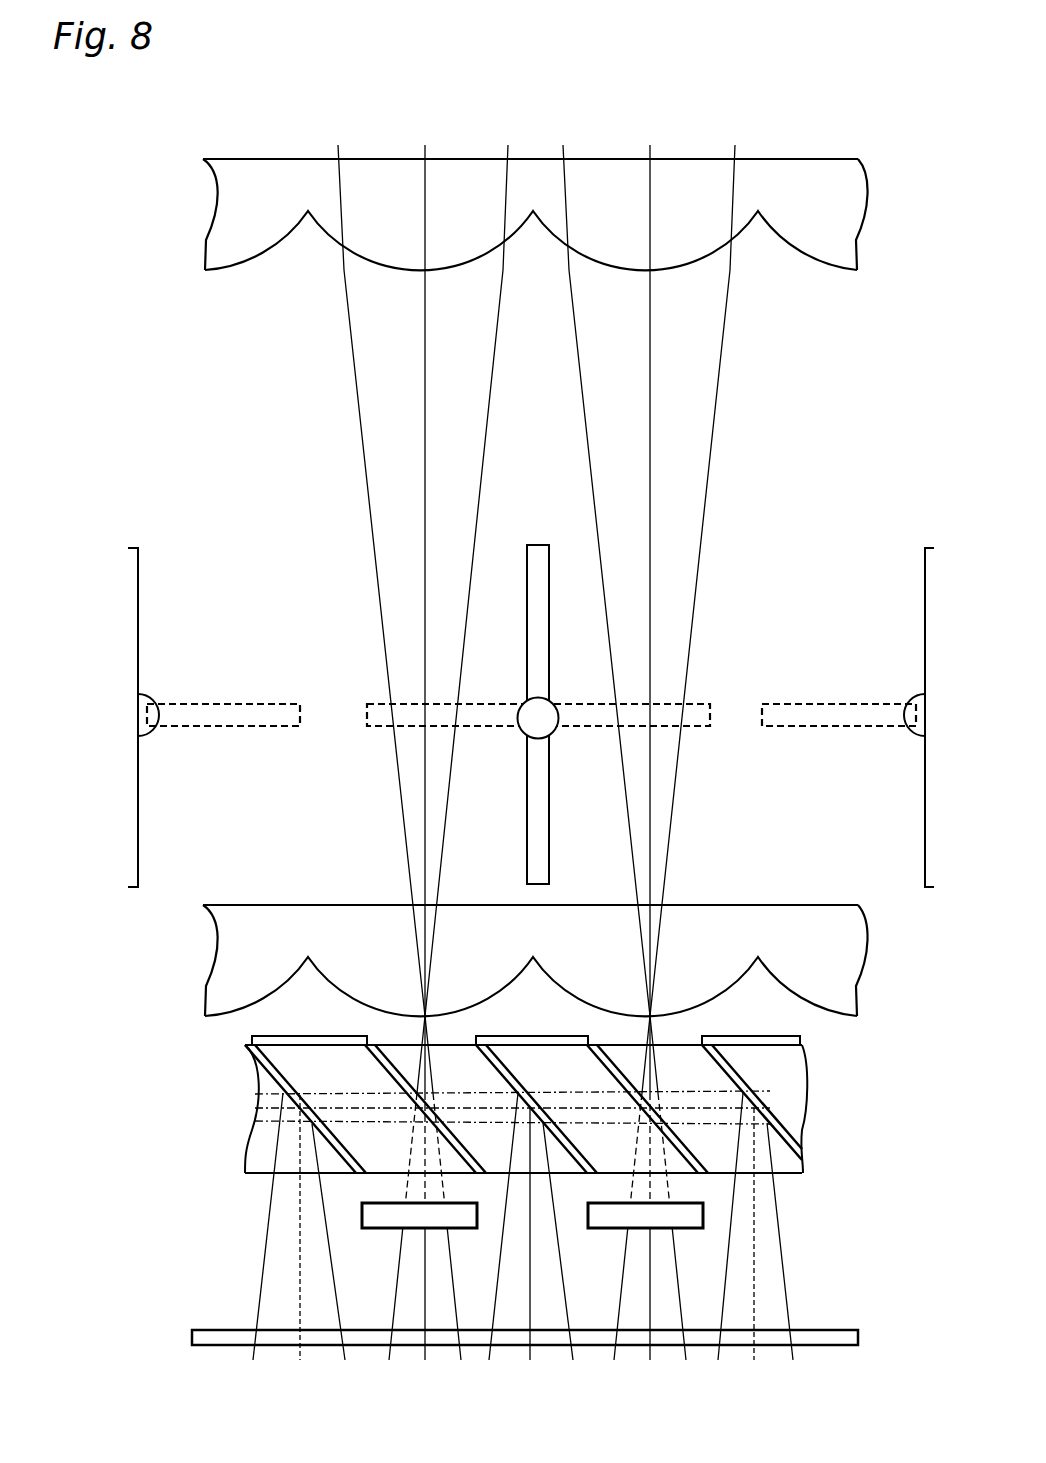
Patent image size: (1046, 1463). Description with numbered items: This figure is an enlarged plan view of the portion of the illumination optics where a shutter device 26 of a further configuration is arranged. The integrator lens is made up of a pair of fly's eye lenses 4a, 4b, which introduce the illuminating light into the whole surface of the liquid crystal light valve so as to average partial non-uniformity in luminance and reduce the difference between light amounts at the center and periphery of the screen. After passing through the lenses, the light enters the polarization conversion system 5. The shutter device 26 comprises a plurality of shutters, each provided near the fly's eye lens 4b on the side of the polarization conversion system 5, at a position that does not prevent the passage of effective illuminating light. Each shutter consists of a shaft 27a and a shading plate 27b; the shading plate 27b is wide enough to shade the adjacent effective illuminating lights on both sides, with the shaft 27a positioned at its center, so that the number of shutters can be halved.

The fly's eye lens 4a is at (858, 212).
The fly's eye lens 4b is at (858, 957).
The polarization conversion system 5 is at (803, 1098).
The shutter device 26 is at (530, 515).
The shaft 27a is at (530, 727).
The shading plate 27b is at (372, 695).